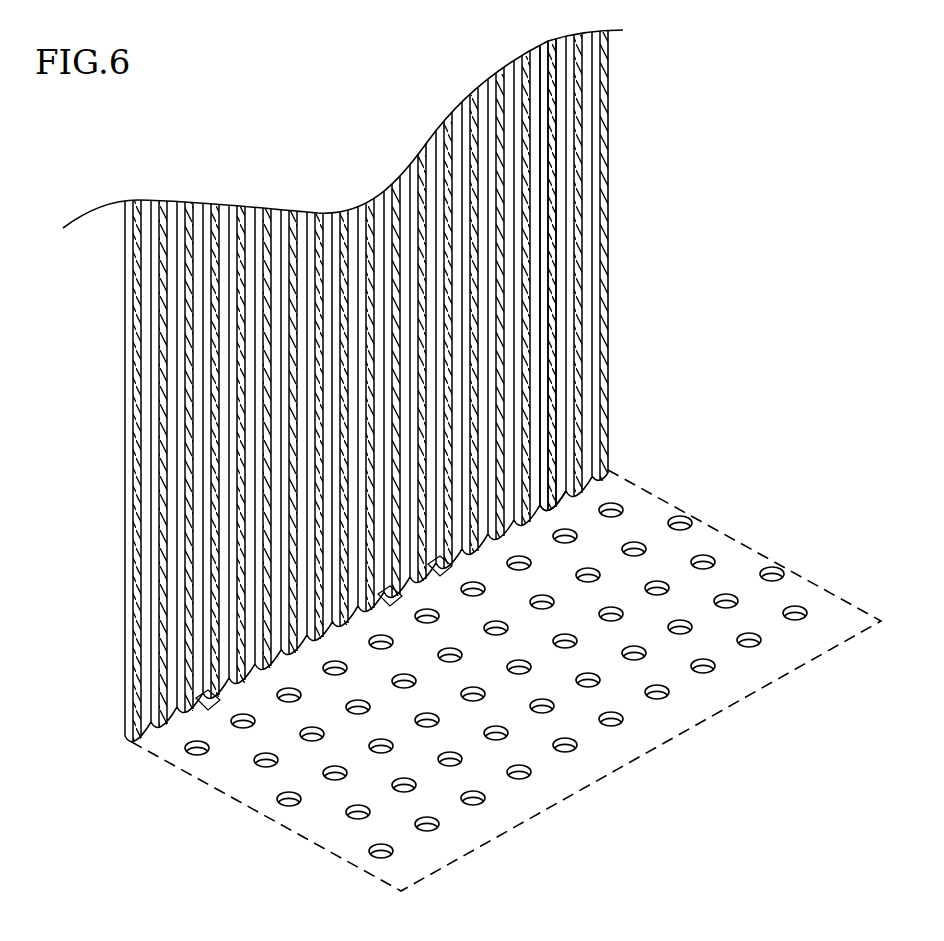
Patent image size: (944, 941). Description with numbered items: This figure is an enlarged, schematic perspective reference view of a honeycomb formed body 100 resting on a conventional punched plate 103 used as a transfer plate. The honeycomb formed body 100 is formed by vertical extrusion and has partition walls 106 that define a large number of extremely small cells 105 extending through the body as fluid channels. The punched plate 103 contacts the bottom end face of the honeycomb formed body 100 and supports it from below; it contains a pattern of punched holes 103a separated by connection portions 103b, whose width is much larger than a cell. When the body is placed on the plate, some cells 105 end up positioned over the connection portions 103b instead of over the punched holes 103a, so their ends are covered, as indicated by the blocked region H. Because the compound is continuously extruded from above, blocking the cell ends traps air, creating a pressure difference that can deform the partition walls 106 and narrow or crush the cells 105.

The honeycomb formed body 100 is at (90, 386).
The punched plate 103 is at (504, 668).
The punched hole 103a is at (499, 652).
The connection portion 103b is at (690, 527).
The cell 105 is at (553, 410).
The partition wall 106 is at (553, 318).
The blocked region H is at (447, 602).